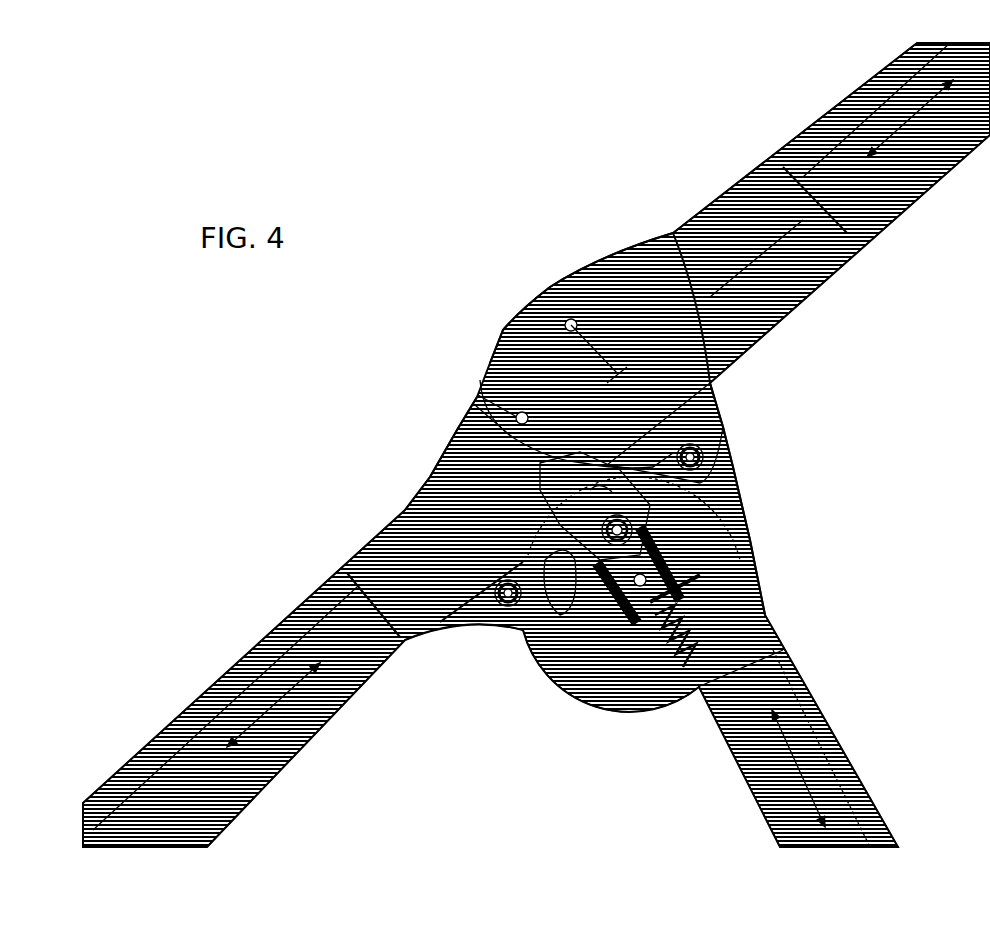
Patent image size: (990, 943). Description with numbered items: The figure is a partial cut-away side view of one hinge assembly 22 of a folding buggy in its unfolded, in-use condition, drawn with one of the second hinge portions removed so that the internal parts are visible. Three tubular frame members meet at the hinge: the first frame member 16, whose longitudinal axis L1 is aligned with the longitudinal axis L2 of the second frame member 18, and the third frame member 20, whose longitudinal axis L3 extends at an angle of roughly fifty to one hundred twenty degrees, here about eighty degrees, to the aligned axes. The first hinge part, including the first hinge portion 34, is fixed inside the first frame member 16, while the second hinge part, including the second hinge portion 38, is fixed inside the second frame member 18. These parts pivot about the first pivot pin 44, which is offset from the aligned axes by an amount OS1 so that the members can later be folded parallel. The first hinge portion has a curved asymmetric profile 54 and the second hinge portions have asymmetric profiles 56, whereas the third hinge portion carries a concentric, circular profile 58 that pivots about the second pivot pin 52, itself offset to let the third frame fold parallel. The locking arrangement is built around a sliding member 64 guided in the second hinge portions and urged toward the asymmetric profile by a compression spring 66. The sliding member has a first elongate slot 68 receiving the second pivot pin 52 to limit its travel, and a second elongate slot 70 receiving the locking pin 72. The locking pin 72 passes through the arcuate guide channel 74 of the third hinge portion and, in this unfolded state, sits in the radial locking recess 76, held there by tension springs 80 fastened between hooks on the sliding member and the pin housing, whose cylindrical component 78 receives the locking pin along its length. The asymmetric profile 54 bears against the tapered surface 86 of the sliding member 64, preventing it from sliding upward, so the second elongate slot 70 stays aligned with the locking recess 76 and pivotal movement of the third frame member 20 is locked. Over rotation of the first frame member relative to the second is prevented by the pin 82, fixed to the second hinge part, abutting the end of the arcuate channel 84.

The first frame member 16 is at (867, 85).
The second frame member 18 is at (182, 727).
The third frame member 20 is at (843, 748).
The hinge assembly 22 is at (433, 200).
The first hinge portion 34 is at (803, 283).
The second hinge portion 38 is at (433, 527).
The first pivot pin 44 is at (577, 322).
The second pivot pin 52 is at (640, 588).
The asymmetric profile 54 is at (587, 457).
The asymmetric profile 56 is at (463, 420).
The circular profile 58 is at (752, 548).
The sliding member 64 is at (612, 683).
The compression spring 66 is at (672, 670).
The first elongate slot 68 is at (660, 600).
The second elongate slot 70 is at (585, 518).
The locking pin 72 is at (632, 528).
The guide channel 74 is at (520, 640).
The locking recess 76 is at (603, 508).
The cylindrical component 78 is at (590, 548).
The tension spring 80 is at (703, 449).
The pin 82 is at (515, 428).
The arcuate channel 84 is at (518, 412).
The tapered surface 86 is at (600, 465).
The longitudinal axis of the first frame member L1 is at (910, 118).
The longitudinal axis of the second frame member L2 is at (273, 705).
The longitudinal axis of the third frame member L3 is at (798, 768).
The off-set amount OS1 is at (605, 354).